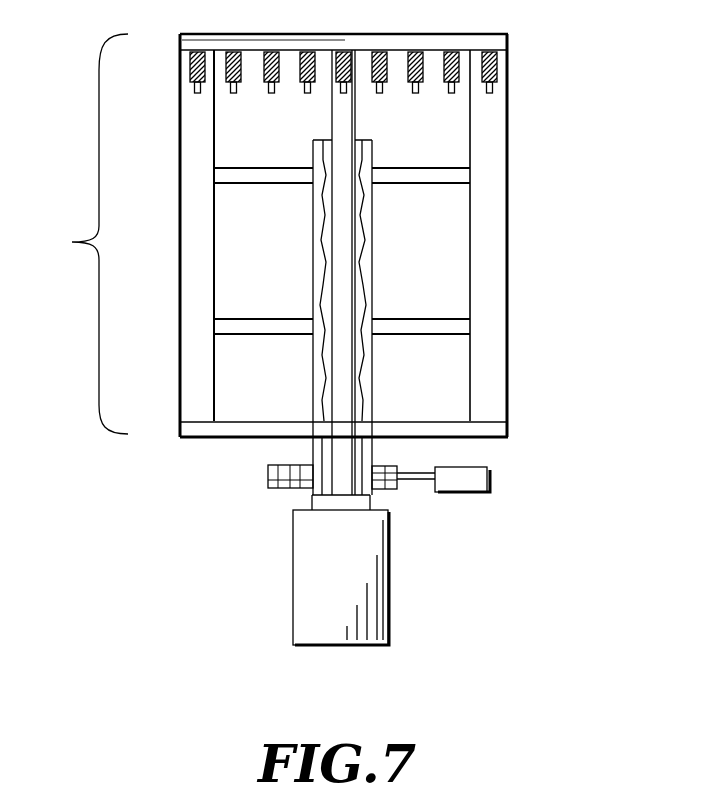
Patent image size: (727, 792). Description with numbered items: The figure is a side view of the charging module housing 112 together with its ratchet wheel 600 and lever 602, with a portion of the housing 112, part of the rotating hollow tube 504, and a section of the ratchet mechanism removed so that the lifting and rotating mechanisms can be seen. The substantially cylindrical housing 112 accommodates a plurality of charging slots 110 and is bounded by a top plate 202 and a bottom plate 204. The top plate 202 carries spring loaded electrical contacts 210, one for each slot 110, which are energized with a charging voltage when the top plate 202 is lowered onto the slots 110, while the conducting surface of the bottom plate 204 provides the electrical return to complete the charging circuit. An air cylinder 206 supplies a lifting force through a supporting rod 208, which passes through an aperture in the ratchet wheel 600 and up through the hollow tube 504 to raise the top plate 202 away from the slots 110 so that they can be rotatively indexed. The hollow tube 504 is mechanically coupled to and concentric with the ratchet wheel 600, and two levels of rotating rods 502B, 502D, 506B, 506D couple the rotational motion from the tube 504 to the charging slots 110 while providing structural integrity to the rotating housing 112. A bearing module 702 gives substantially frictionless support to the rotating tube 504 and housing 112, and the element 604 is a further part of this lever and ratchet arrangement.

The charging module housing 112 is at (75, 234).
The charging slots 110 is at (182, 252).
The top plate 202 is at (470, 36).
The bottom plate 204 is at (497, 440).
The air cylinder 206 is at (298, 622).
The supporting rod 208 is at (335, 105).
The spring loaded electrical contacts 210 is at (190, 66).
The rotating rod 502B is at (298, 180).
The rotating rod 502D is at (383, 170).
The hollow tube 504 is at (373, 237).
The rotating rod 506B is at (298, 332).
The rotating rod 506D is at (385, 334).
The ratchet wheel 600 is at (268, 475).
The lever 602 is at (405, 488).
The sensor 604 is at (483, 495).
The bearing module 702 is at (305, 503).